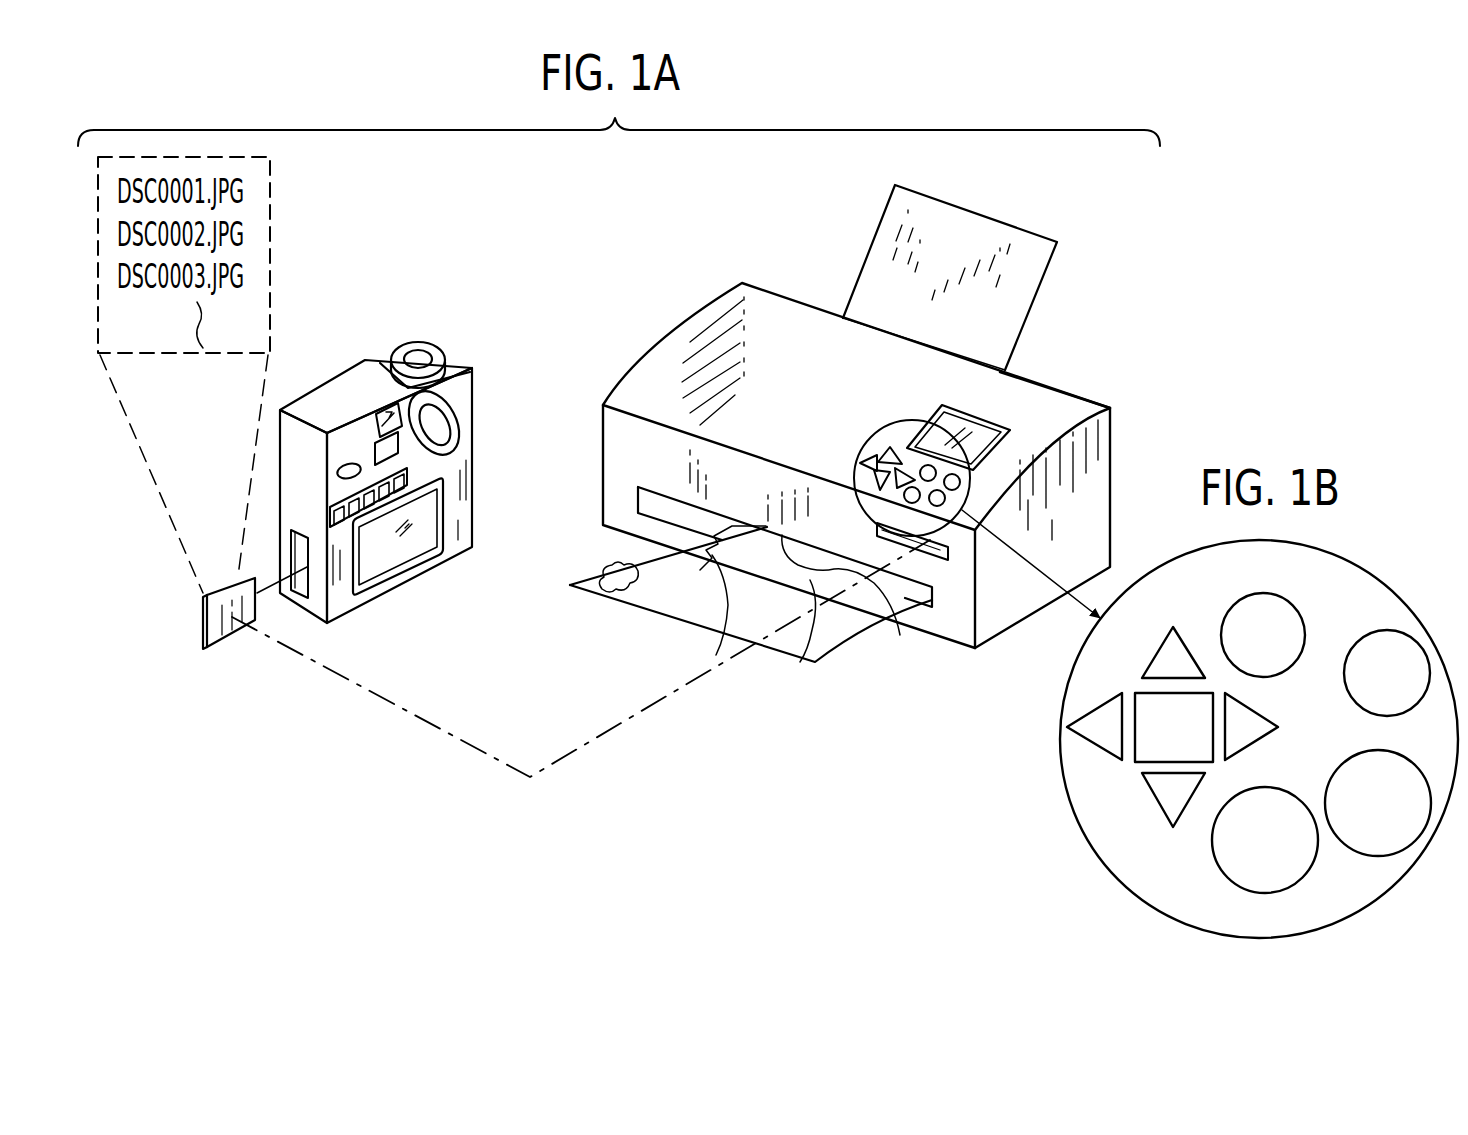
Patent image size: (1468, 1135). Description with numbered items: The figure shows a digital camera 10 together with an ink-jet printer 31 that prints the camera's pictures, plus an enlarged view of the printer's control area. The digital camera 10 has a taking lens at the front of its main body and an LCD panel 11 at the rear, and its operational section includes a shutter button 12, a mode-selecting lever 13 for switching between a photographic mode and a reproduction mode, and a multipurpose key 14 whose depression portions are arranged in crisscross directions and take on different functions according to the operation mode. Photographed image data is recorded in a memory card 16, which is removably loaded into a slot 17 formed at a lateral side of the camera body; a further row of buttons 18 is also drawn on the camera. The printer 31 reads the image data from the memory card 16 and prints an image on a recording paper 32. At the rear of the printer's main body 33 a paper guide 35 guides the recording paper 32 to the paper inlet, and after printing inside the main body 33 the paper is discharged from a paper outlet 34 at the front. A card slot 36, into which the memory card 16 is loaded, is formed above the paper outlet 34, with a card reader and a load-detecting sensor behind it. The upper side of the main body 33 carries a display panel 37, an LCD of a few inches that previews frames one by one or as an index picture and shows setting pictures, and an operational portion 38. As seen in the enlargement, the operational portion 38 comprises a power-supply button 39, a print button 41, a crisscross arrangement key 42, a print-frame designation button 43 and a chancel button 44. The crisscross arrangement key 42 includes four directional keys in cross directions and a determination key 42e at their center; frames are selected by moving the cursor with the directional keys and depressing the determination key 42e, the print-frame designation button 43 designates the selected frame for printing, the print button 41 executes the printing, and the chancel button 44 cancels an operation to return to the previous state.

In FIG. 1A, the digital camera 10 is at (388, 300).
In FIG. 1A, the LCD panel 11 is at (428, 544).
In FIG. 1A, the shutter button 12 is at (433, 347).
In FIG. 1A, the mode-selecting lever 13 is at (355, 463).
In FIG. 1A, the multipurpose key 14 is at (456, 420).
In FIG. 1A, the memory card 16 is at (216, 640).
In FIG. 1A, the slot 17 is at (308, 597).
In FIG. 1A, the operation buttons 18 is at (328, 500).
In FIG. 1A, the printer 31 is at (775, 262).
In FIG. 1A, the recording paper 32 is at (772, 648).
In FIG. 1A, the main body 33 is at (1050, 384).
In FIG. 1A, the paper outlet 34 is at (914, 608).
In FIG. 1A, the paper guide 35 is at (1006, 236).
In FIG. 1A, the card slot 36 is at (946, 560).
In FIG. 1A, the display panel 37 is at (930, 408).
In FIG. 1A, the operational portion 38 is at (850, 462).
In FIG. 1B, the power-supply button 39 is at (1368, 650).
In FIG. 1B, the print button 41 is at (1370, 758).
In FIG. 1B, the crisscross arrangement key 42 is at (1118, 760).
In FIG. 1B, the determination key 42e is at (1131, 767).
In FIG. 1B, the print-frame designation button 43 is at (1280, 797).
In FIG. 1B, the chancel button 44 is at (1268, 595).